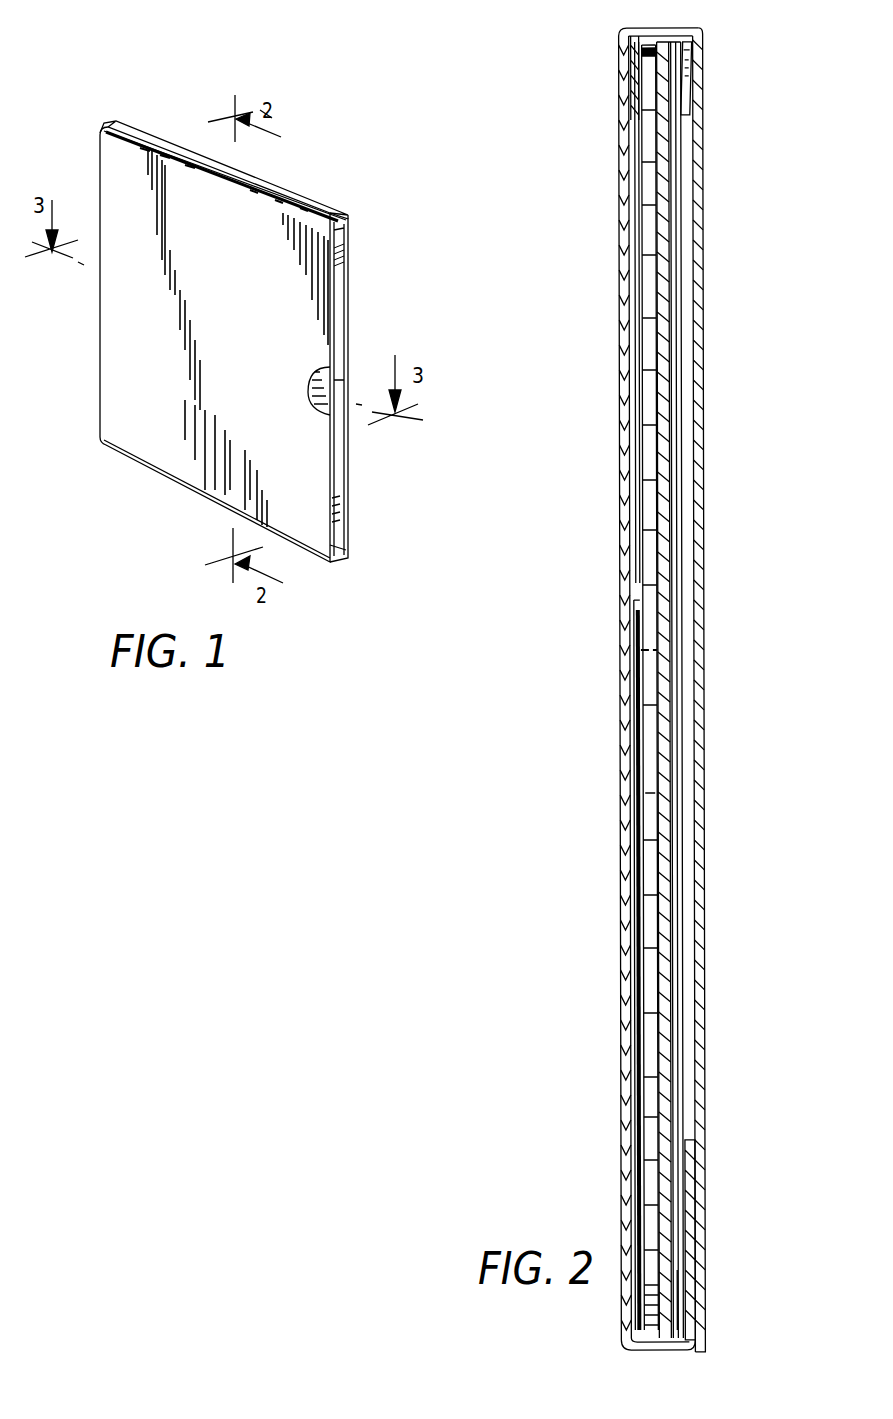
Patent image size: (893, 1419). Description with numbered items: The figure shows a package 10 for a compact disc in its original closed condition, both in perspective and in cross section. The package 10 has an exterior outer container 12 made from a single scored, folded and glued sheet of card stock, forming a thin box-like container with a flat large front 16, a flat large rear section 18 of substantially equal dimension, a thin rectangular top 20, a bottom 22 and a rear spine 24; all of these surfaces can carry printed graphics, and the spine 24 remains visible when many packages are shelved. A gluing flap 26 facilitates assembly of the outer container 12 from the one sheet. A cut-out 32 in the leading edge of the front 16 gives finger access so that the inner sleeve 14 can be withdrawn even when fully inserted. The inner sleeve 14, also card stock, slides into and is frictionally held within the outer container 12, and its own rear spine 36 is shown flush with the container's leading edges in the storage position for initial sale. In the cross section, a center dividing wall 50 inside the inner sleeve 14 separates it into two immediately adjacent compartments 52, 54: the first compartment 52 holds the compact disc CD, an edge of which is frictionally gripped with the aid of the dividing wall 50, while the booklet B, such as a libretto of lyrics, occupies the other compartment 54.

In FIG. 1, the package 10 is at (366, 251).
In FIG. 1, the outer container 12 is at (125, 437).
In FIG. 2, the outer container 12 is at (628, 1084).
In FIG. 1, the inner sleeve 14 is at (340, 300).
In FIG. 1, the front 16 is at (250, 294).
In FIG. 2, the front 16 is at (640, 660).
In FIG. 2, the rear section 18 is at (704, 660).
In FIG. 1, the top 20 is at (296, 195).
In FIG. 2, the top 20 is at (682, 33).
In FIG. 1, the bottom 22 is at (196, 490).
In FIG. 2, the bottom 22 is at (638, 1347).
In FIG. 1, the rear spine 24 is at (97, 388).
In FIG. 2, the gluing flap 26 is at (706, 1012).
In FIG. 1, the cut-out 32 is at (345, 372).
In FIG. 1, the rear spine of inner sleeve 36 is at (343, 532).
In FIG. 2, the center dividing wall 50 is at (667, 548).
In FIG. 2, the first compartment 52 is at (631, 408).
In FIG. 2, the second compartment 54 is at (689, 110).
In FIG. 2, the booklet B is at (683, 295).
In FIG. 2, the compact disc CD is at (655, 162).